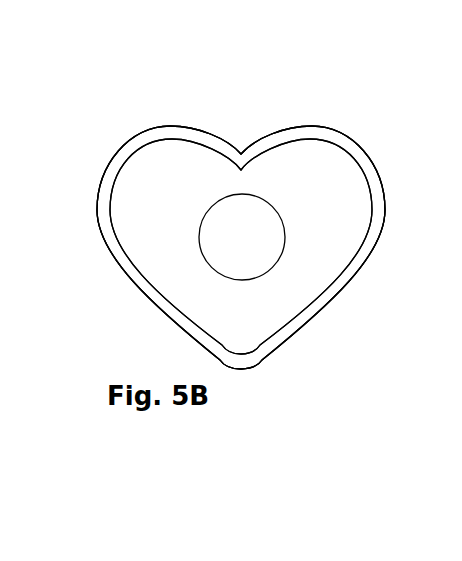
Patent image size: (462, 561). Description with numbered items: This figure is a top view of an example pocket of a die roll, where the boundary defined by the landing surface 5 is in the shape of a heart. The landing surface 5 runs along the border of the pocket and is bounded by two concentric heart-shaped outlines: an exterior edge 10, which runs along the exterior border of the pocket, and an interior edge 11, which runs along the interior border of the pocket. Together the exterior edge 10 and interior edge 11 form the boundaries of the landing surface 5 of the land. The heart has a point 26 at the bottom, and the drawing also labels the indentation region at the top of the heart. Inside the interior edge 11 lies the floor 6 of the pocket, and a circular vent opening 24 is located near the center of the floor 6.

The landing surface 5 is at (107, 215).
The floor 6 is at (330, 187).
The exterior edge 10 is at (383, 245).
The interior edge 11 is at (373, 212).
The vent opening 24 is at (225, 221).
The point 26 is at (244, 138).